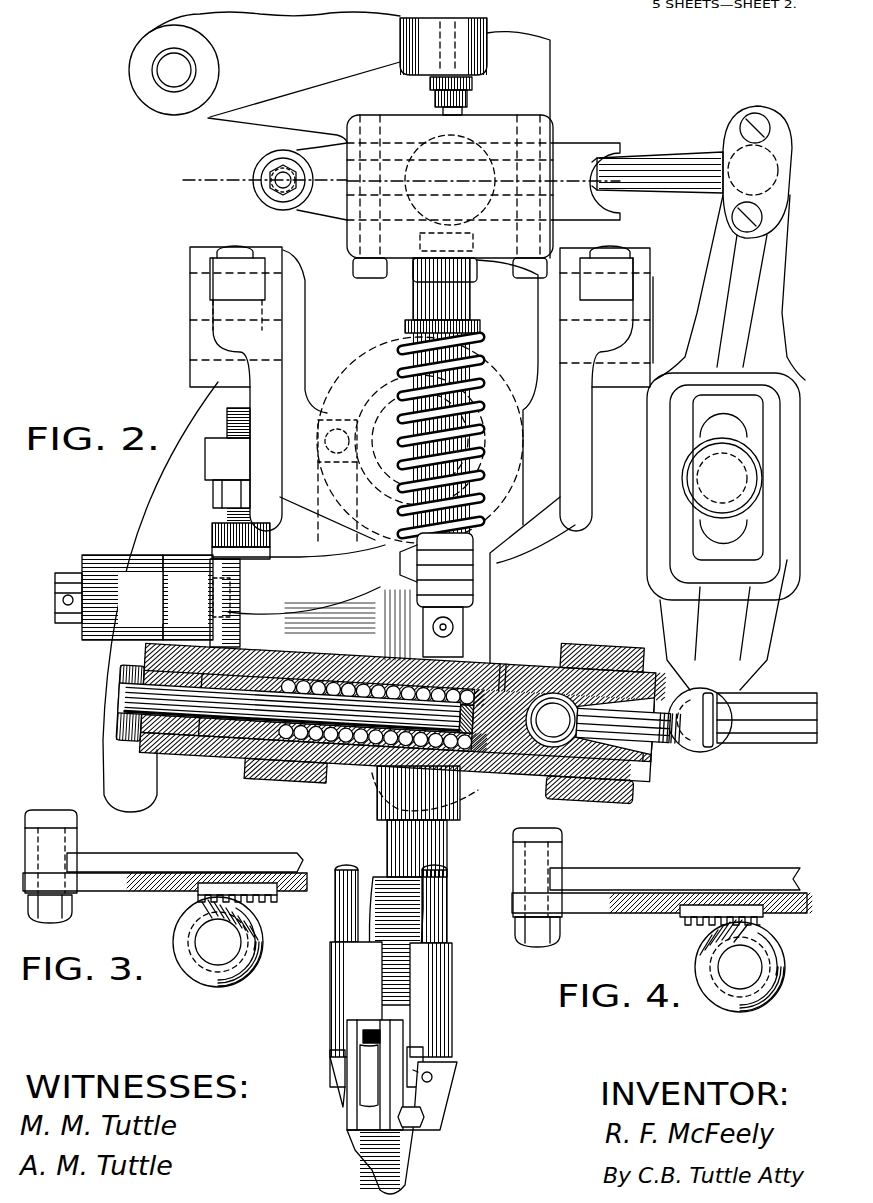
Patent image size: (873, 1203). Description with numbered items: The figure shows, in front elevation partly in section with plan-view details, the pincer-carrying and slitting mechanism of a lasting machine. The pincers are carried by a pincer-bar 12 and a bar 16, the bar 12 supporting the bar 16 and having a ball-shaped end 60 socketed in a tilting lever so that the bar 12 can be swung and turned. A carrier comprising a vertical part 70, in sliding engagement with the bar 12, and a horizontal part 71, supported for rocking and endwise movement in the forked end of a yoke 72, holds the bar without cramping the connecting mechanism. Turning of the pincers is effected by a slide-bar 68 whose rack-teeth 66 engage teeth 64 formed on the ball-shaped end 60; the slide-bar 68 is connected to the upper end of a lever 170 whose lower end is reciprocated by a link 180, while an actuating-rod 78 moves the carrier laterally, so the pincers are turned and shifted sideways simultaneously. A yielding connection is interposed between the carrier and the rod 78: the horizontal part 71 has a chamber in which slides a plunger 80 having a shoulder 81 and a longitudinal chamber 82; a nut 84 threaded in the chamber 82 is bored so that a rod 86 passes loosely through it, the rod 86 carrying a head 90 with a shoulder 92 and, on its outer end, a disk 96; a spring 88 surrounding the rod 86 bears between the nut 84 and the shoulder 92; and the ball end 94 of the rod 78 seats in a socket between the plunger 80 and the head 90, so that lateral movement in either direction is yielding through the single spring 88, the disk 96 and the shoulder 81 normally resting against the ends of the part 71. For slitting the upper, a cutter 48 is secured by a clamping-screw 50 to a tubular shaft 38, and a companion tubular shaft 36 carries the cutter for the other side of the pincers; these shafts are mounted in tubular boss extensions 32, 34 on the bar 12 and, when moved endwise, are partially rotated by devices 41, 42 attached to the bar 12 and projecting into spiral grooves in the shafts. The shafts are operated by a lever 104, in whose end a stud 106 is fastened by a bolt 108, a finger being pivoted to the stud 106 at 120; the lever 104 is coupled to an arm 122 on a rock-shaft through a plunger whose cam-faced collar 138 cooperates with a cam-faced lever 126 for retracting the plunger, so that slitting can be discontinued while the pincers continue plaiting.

In FIG. 2, the pincer-bar 12 is at (408, 912).
In FIG. 2, the bar 16 is at (465, 110).
In FIG. 2, the tubular boss extension 32 is at (330, 958).
In FIG. 2, the tubular boss extension 34 is at (452, 960).
In FIG. 2, the tubular shaft 36 is at (345, 868).
In FIG. 2, the tubular shaft 38 is at (450, 868).
In FIG. 2, the device 41 is at (330, 1055).
In FIG. 2, the device 42 is at (420, 1062).
In FIG. 2, the cutter 48 is at (430, 1115).
In FIG. 2, the clamping-screw 50 is at (447, 1075).
In FIG. 2, the ball-shaped end 60 is at (432, 140).
In FIG. 3, the ball-shaped end 60 is at (226, 986).
In FIG. 4, the ball-shaped end 60 is at (770, 990).
In FIG. 3, the teeth 64 is at (256, 925).
In FIG. 4, the teeth 64 is at (700, 948).
In FIG. 3, the rack-teeth 66 is at (220, 883).
In FIG. 4, the rack-teeth 66 is at (750, 905).
In FIG. 2, the slide-bar 68 is at (584, 147).
In FIG. 3, the slide-bar 68 is at (97, 873).
In FIG. 4, the slide-bar 68 is at (597, 900).
In FIG. 2, the vertical part of carrier 70 is at (386, 820).
In FIG. 2, the horizontal part of carrier 71 is at (506, 665).
In FIG. 2, the yoke 72 is at (585, 650).
In FIG. 2, the actuating-rod 78 is at (655, 742).
In FIG. 2, the plunger 80 is at (550, 665).
In FIG. 2, the shoulder 81 is at (648, 672).
In FIG. 2, the chamber 82 is at (370, 782).
In FIG. 2, the nut 84 is at (292, 782).
In FIG. 2, the rod 86 is at (230, 740).
In FIG. 2, the spring 88 is at (345, 782).
In FIG. 2, the head 90 is at (530, 774).
In FIG. 2, the shoulder 92 is at (468, 776).
In FIG. 2, the ball end 94 is at (575, 797).
In FIG. 2, the disk 96 is at (118, 722).
In FIG. 2, the lever 104 is at (312, 570).
In FIG. 2, the stud 106 is at (455, 630).
In FIG. 2, the bolt 108 is at (404, 570).
In FIG. 2, the pivotal connection 120 is at (468, 605).
In FIG. 2, the arm 122 is at (196, 597).
In FIG. 2, the cam-faced lever 126 is at (122, 597).
In FIG. 2, the cam-faced collar 138 is at (90, 565).
In FIG. 2, the lever 170 is at (745, 333).
In FIG. 2, the link 180 is at (780, 700).